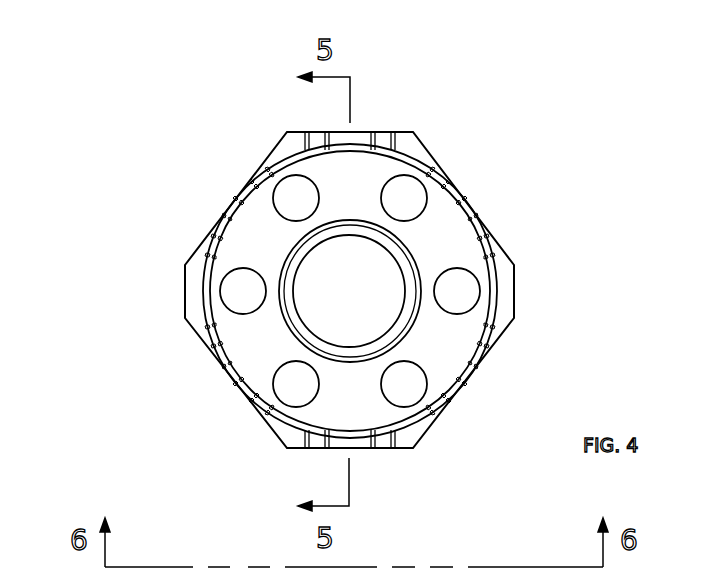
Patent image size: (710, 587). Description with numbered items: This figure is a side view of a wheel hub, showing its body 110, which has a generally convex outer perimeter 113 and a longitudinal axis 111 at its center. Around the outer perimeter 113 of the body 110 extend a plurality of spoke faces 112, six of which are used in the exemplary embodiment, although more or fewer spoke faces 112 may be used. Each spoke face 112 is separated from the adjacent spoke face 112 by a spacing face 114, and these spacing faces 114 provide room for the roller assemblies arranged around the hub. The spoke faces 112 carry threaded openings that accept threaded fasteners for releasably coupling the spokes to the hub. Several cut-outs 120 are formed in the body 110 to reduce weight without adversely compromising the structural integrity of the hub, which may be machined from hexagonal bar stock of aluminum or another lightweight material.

The body 110 is at (354, 297).
The longitudinal axis 111 is at (314, 317).
The spoke face 112 is at (219, 206).
The outer perimeter 113 is at (244, 168).
The spacing face 114 is at (264, 143).
The cut-out 120 is at (215, 270).